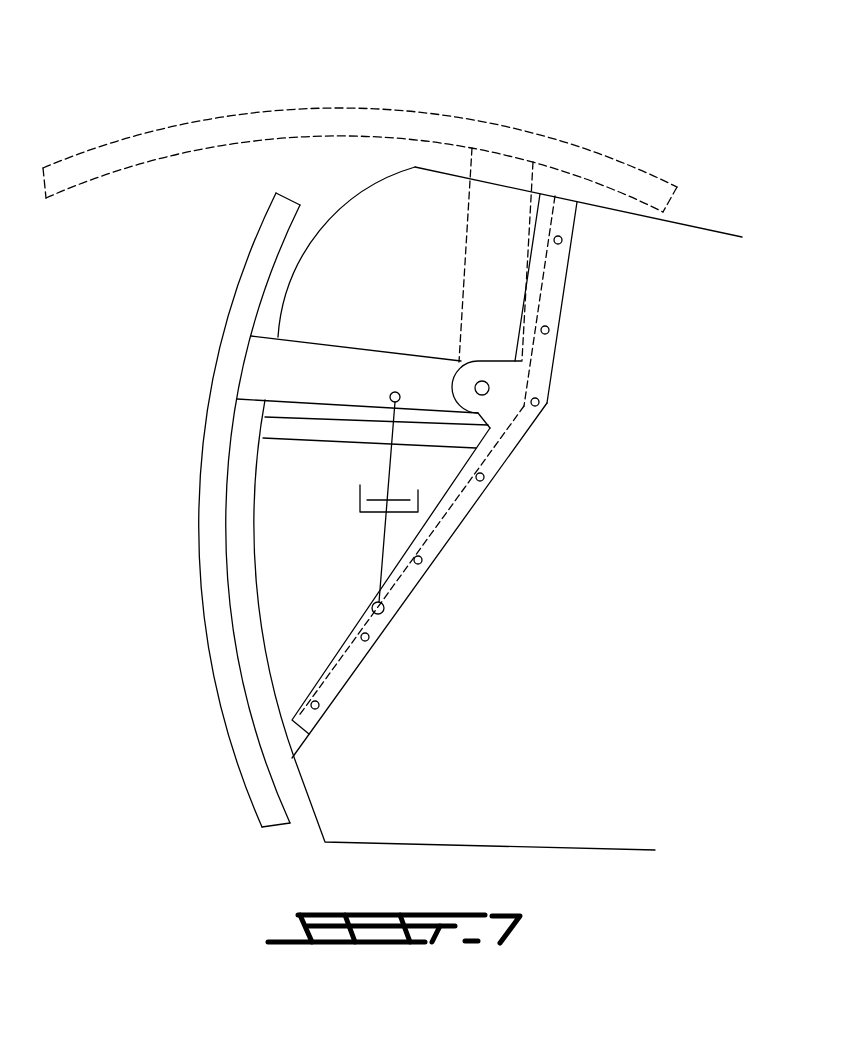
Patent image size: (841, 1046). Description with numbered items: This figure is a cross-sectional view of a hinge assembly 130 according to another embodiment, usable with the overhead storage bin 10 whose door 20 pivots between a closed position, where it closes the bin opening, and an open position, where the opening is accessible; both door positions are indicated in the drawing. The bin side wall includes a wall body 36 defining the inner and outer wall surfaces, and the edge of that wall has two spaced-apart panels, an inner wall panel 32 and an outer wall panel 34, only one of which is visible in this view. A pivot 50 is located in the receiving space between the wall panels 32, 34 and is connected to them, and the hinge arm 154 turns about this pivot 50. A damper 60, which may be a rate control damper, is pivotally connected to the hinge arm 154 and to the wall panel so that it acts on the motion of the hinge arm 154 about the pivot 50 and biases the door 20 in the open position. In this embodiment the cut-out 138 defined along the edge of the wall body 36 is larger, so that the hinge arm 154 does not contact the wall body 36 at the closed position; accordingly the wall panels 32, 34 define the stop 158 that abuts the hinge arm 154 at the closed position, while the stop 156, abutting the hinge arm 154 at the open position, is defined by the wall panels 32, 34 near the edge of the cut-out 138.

The storage bin 10 is at (683, 134).
The door 20 is at (97, 170).
The inner wall panel 32 is at (510, 207).
The outer wall panel 34 is at (433, 208).
The wall body 36 is at (596, 542).
The pivot 50 is at (482, 390).
The damper 60 is at (387, 530).
The hinge assembly 130 is at (583, 385).
The cut-out 138 is at (303, 740).
The hinge arm 154 is at (290, 365).
The stop 156 is at (540, 213).
The stop 158 is at (302, 430).